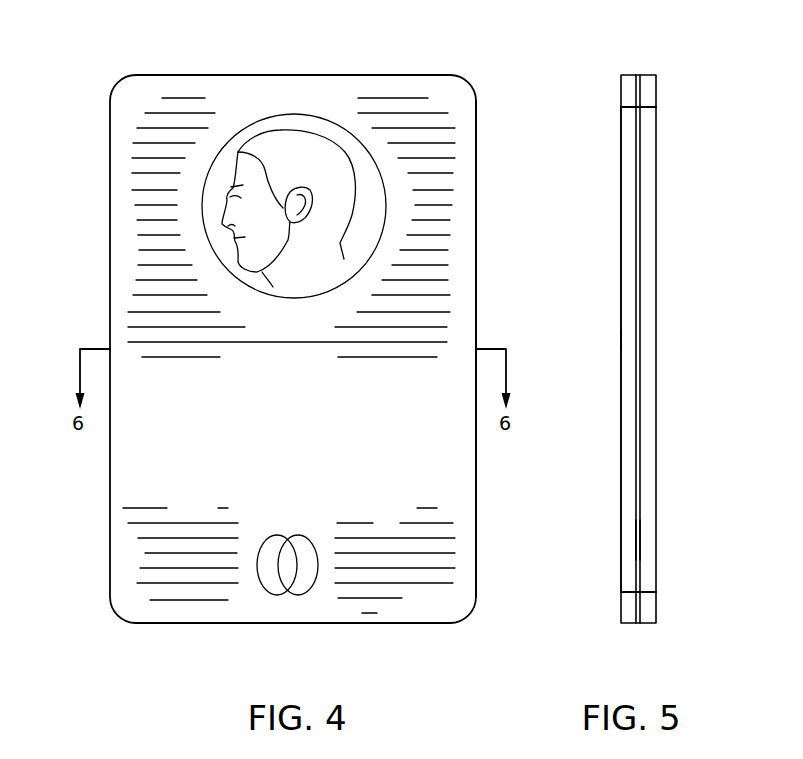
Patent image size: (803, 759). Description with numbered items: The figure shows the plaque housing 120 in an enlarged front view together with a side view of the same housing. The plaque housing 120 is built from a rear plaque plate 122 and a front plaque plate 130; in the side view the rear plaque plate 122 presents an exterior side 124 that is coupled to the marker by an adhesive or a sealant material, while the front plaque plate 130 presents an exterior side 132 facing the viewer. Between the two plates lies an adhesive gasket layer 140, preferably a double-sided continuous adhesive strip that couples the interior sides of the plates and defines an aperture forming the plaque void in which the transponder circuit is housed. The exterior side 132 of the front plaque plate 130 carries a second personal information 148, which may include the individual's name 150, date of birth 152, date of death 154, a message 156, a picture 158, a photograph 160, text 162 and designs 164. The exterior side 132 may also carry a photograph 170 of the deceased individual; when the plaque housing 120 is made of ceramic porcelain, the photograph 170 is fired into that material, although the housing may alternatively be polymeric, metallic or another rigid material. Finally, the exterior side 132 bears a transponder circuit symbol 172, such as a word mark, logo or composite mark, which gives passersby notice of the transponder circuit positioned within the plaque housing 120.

In FIG. 4, the plaque housing 120 is at (417, 75).
In FIG. 5, the plaque housing 120 is at (656, 75).
In FIG. 5, the rear plaque plate 122 is at (654, 134).
In FIG. 5, the exterior side 124 is at (656, 238).
In FIG. 4, the front plaque plate 130 is at (454, 88).
In FIG. 5, the front plaque plate 130 is at (621, 278).
In FIG. 4, the exterior side 132 is at (468, 127).
In FIG. 5, the exterior side 132 is at (621, 341).
In FIG. 5, the adhesive gasket layer 140 is at (637, 538).
In FIG. 4, the second personal information 148 is at (413, 400).
In FIG. 4, the individual's name 150 is at (289, 425).
In FIG. 4, the date of birth 152 is at (292, 488).
In FIG. 4, the date of death 154 is at (426, 481).
In FIG. 4, the message 156 is at (200, 495).
In FIG. 4, the picture 158 is at (240, 128).
In FIG. 4, the photograph 160 is at (322, 128).
In FIG. 4, the text 162 is at (289, 387).
In FIG. 4, the designs 164 is at (291, 153).
In FIG. 4, the photograph of the deceased individual 170 is at (240, 167).
In FIG. 4, the transponder circuit symbol 172 is at (280, 594).